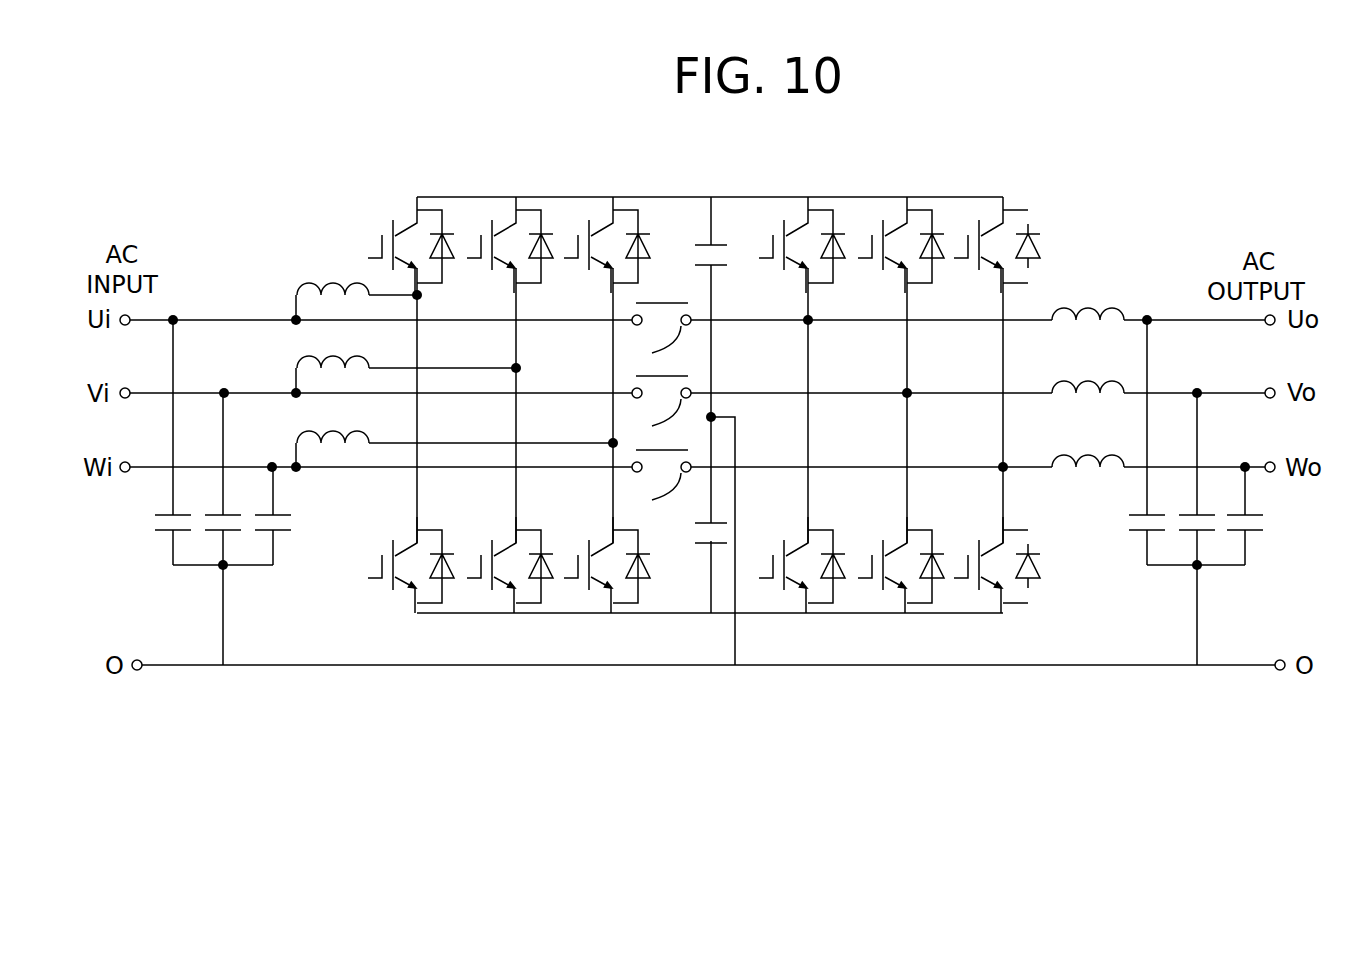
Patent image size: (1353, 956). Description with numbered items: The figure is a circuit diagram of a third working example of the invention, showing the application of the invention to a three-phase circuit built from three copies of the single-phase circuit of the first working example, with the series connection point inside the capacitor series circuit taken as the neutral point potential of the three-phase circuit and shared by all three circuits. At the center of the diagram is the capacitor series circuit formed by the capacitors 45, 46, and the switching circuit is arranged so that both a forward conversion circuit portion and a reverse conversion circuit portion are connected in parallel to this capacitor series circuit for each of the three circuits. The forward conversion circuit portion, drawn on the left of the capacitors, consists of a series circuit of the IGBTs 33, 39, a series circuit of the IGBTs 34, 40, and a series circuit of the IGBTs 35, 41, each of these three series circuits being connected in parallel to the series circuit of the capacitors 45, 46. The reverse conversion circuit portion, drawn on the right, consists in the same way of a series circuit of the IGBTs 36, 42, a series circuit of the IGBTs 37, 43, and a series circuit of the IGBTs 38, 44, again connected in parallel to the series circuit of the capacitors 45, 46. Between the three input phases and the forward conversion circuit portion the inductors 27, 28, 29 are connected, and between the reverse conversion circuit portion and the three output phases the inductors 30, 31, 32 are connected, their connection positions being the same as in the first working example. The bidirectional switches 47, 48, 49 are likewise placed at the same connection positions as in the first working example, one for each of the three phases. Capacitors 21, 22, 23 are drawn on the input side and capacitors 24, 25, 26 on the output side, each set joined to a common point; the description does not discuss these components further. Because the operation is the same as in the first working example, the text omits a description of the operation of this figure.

The input filter capacitor 21 is at (166, 506).
The input filter capacitor 22 is at (219, 506).
The input filter capacitor 23 is at (270, 506).
The output filter capacitor 24 is at (1141, 505).
The output filter capacitor 25 is at (1193, 505).
The output filter capacitor 26 is at (1242, 505).
The inductor 27 is at (348, 285).
The inductor 28 is at (348, 360).
The inductor 29 is at (348, 432).
The inductor 30 is at (1108, 300).
The inductor 31 is at (1108, 375).
The inductor 32 is at (1108, 448).
The IGBT 33 is at (378, 232).
The IGBT 34 is at (490, 213).
The IGBT 35 is at (590, 213).
The IGBT 36 is at (788, 213).
The IGBT 37 is at (880, 213).
The IGBT 38 is at (974, 213).
The IGBT 39 is at (402, 540).
The IGBT 40 is at (502, 540).
The IGBT 41 is at (600, 540).
The IGBT 42 is at (797, 540).
The IGBT 43 is at (892, 540).
The IGBT 44 is at (988, 540).
The capacitor 45 is at (706, 238).
The capacitor 46 is at (700, 546).
The bidirectional switch 47 is at (655, 336).
The bidirectional switch 48 is at (655, 407).
The bidirectional switch 49 is at (655, 481).